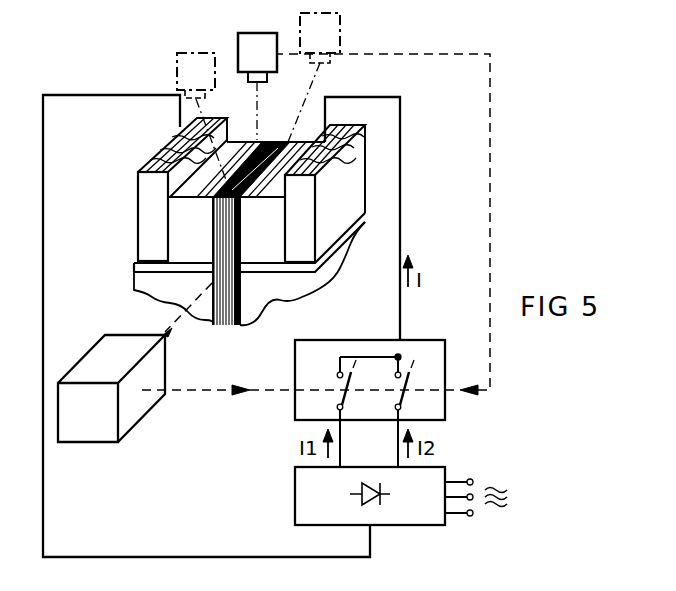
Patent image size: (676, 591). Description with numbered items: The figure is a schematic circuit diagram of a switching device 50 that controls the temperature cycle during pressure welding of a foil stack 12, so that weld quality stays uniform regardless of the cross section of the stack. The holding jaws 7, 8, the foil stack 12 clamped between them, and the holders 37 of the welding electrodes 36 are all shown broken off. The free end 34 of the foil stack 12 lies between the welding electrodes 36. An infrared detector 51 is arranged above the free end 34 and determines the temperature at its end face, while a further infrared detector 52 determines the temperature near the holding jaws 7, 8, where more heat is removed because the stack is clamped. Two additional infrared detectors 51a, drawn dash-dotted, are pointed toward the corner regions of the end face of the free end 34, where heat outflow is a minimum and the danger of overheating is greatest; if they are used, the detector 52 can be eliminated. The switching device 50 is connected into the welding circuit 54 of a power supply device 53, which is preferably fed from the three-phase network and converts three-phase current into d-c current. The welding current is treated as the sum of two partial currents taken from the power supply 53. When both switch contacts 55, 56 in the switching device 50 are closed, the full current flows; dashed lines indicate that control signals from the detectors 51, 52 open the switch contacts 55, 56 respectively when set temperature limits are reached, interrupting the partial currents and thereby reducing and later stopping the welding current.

The holding jaw 7 is at (156, 300).
The holding jaw 8 is at (306, 299).
The foil stack 12 is at (228, 327).
The free end of the foil stack 34 is at (277, 139).
The welding electrodes 36 is at (245, 135).
The holders 37 is at (145, 212).
The switching device 50 is at (447, 331).
The infrared detector 51 is at (247, 43).
The infrared detectors 51a is at (177, 70).
The infrared detector 52 is at (85, 431).
The power supply device 53 is at (413, 518).
The welding circuit 54 is at (400, 207).
The switch contact 55 is at (395, 381).
The switch contact 56 is at (337, 379).